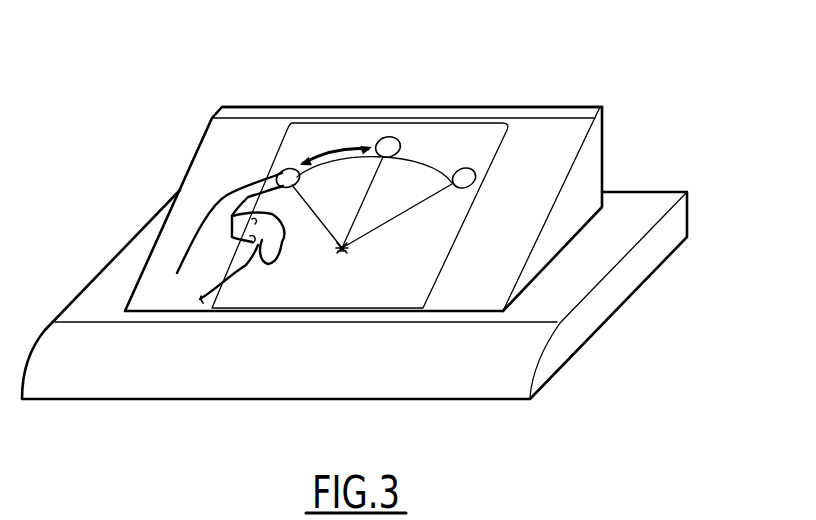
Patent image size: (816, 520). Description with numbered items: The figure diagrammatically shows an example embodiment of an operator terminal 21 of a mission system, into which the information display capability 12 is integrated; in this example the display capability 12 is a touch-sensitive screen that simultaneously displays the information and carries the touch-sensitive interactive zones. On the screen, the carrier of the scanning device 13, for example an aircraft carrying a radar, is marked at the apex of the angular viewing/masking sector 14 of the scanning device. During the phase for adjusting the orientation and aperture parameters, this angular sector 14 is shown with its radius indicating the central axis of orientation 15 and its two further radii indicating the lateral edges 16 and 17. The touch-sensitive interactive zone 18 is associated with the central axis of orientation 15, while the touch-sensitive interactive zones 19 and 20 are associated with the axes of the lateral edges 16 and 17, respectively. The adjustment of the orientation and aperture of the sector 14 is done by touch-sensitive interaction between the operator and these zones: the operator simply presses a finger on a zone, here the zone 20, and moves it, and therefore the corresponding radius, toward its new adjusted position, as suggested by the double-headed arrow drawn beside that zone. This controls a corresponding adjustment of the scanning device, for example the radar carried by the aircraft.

The information display capability 12 is at (488, 103).
The carrier of the scanning device 13 is at (349, 262).
The angular viewing/masking sector 14 is at (446, 204).
The central axis of orientation 15 is at (368, 227).
The lateral edge 16 is at (409, 222).
The lateral edge 17 is at (314, 237).
The touch-sensitive interactive zone 18 is at (403, 128).
The touch-sensitive interactive zone 19 is at (480, 168).
The touch-sensitive interactive zone 20 is at (286, 150).
The operator terminal 21 is at (645, 163).